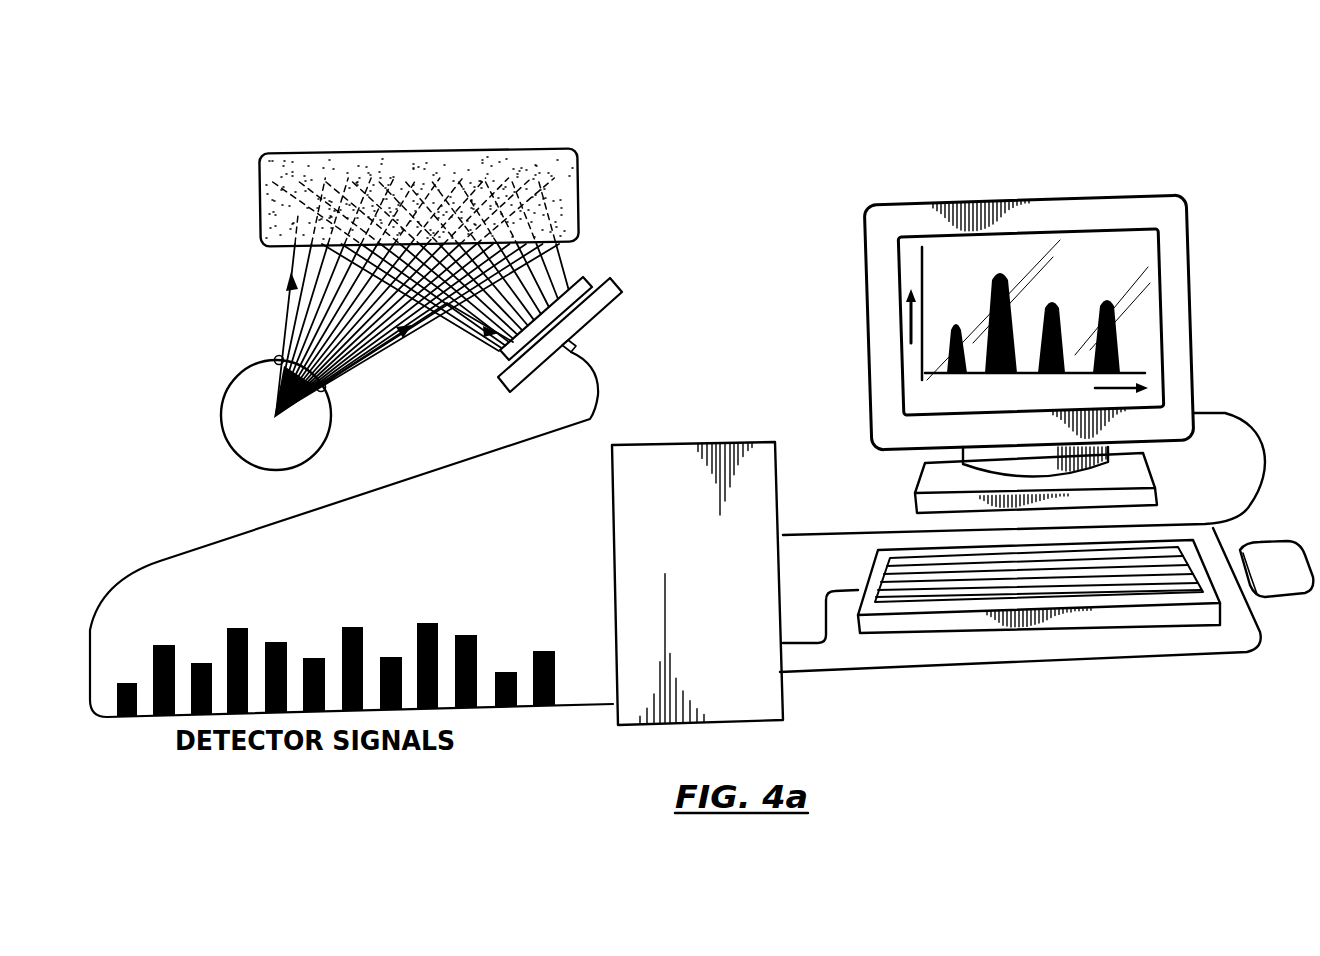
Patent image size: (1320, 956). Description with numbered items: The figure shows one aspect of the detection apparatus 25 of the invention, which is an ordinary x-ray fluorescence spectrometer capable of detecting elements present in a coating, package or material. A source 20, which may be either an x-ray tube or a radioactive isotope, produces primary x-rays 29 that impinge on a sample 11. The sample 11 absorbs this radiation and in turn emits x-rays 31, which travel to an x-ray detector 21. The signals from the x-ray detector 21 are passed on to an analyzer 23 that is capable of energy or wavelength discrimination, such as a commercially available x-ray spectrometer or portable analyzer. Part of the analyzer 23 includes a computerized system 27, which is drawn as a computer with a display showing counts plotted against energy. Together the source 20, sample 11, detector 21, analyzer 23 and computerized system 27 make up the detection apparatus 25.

The sample 11 is at (437, 160).
The x-rays 29 is at (286, 316).
The source 20 is at (260, 442).
The emitted x-rays 31 is at (573, 264).
The x-ray detector 21 is at (580, 313).
The analyzer 23 is at (740, 680).
The detection apparatus 25 is at (1046, 377).
The computerized system 27 is at (1085, 185).